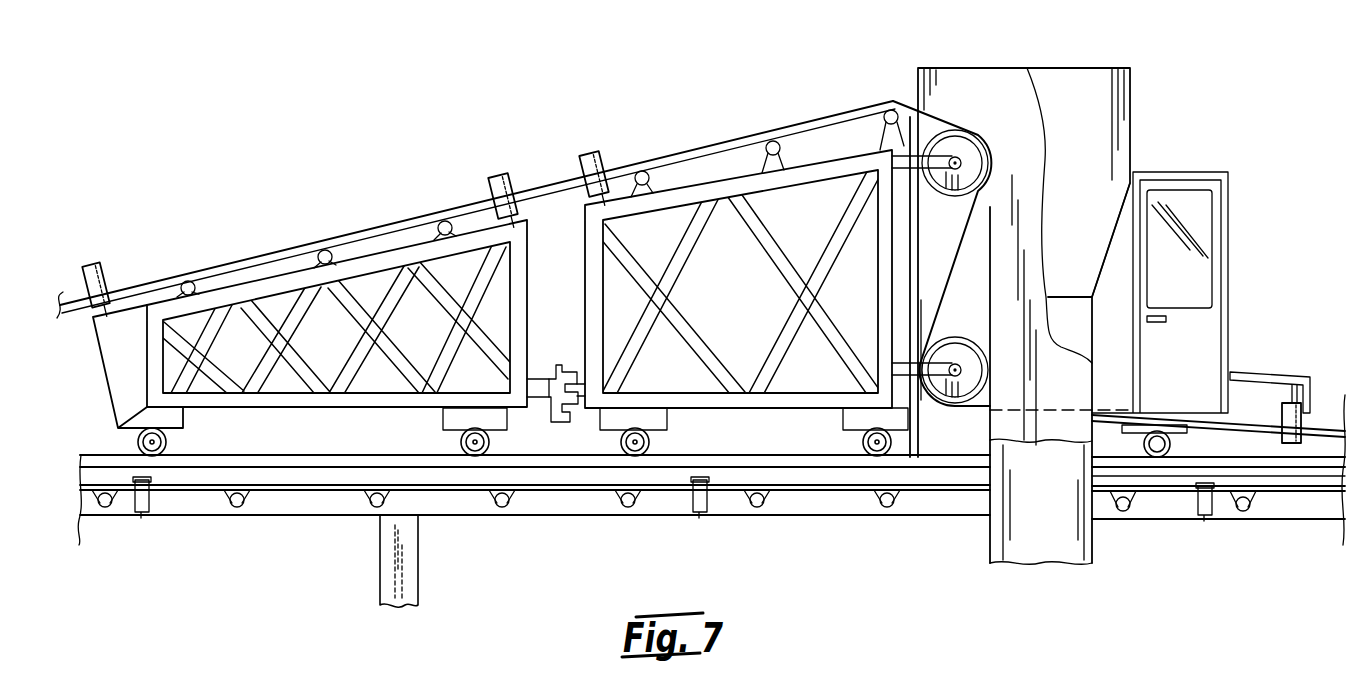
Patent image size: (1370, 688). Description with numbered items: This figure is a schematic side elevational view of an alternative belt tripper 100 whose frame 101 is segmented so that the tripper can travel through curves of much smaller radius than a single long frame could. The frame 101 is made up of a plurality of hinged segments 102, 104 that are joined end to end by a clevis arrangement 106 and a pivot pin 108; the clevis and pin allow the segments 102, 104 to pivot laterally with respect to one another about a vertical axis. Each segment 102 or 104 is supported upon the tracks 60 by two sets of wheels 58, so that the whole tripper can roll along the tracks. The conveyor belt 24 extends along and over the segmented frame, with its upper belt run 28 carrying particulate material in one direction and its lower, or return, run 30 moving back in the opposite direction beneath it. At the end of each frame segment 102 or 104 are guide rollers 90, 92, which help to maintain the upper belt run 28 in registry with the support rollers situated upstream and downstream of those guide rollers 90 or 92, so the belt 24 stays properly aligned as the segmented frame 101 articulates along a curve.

The belt 24 is at (694, 149).
The upper belt run 28 is at (798, 125).
The lower belt run 30 is at (803, 516).
The wheels 58 is at (167, 443).
The tracks 60 is at (112, 455).
The guide roller 90 is at (103, 266).
The guide roller 92 is at (503, 174).
The belt tripper 100 is at (395, 130).
The frame 101 is at (866, 146).
The hinged segment 102 is at (362, 258).
The hinged segment 104 is at (675, 183).
The clevis arrangement 106 is at (548, 372).
The pivot pin 108 is at (558, 362).